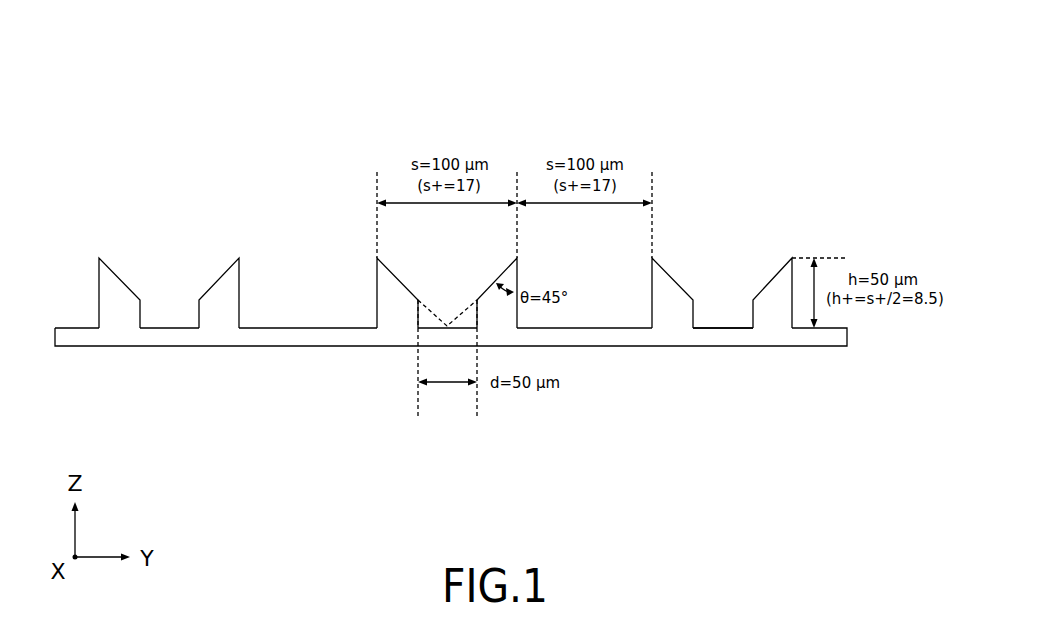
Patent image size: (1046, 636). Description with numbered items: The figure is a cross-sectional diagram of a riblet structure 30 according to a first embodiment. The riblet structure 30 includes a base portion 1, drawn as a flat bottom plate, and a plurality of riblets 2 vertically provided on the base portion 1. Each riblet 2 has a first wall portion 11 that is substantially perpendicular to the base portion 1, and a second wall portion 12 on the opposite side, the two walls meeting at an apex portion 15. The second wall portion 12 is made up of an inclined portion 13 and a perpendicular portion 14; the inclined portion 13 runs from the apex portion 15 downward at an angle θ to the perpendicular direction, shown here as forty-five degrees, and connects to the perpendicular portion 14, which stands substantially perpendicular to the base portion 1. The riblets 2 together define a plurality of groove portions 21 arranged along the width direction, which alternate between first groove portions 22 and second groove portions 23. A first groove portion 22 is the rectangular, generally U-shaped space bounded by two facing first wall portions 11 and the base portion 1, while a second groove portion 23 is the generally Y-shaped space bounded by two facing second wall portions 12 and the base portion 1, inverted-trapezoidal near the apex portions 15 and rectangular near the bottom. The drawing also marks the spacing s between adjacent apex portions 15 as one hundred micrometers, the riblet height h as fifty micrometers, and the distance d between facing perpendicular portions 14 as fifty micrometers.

The riblet structure 30 is at (460, 70).
The base portion 1 is at (303, 336).
The riblet 2 is at (402, 268).
The first wall portion 11 is at (652, 303).
The second wall portion 12 is at (677, 212).
The inclined portion 13 is at (675, 278).
The perpendicular portion 14 is at (698, 313).
The apex portion 15 is at (795, 257).
The groove portion 21 is at (327, 184).
The first groove portion 22 is at (302, 287).
The second groove portion 23 is at (170, 297).